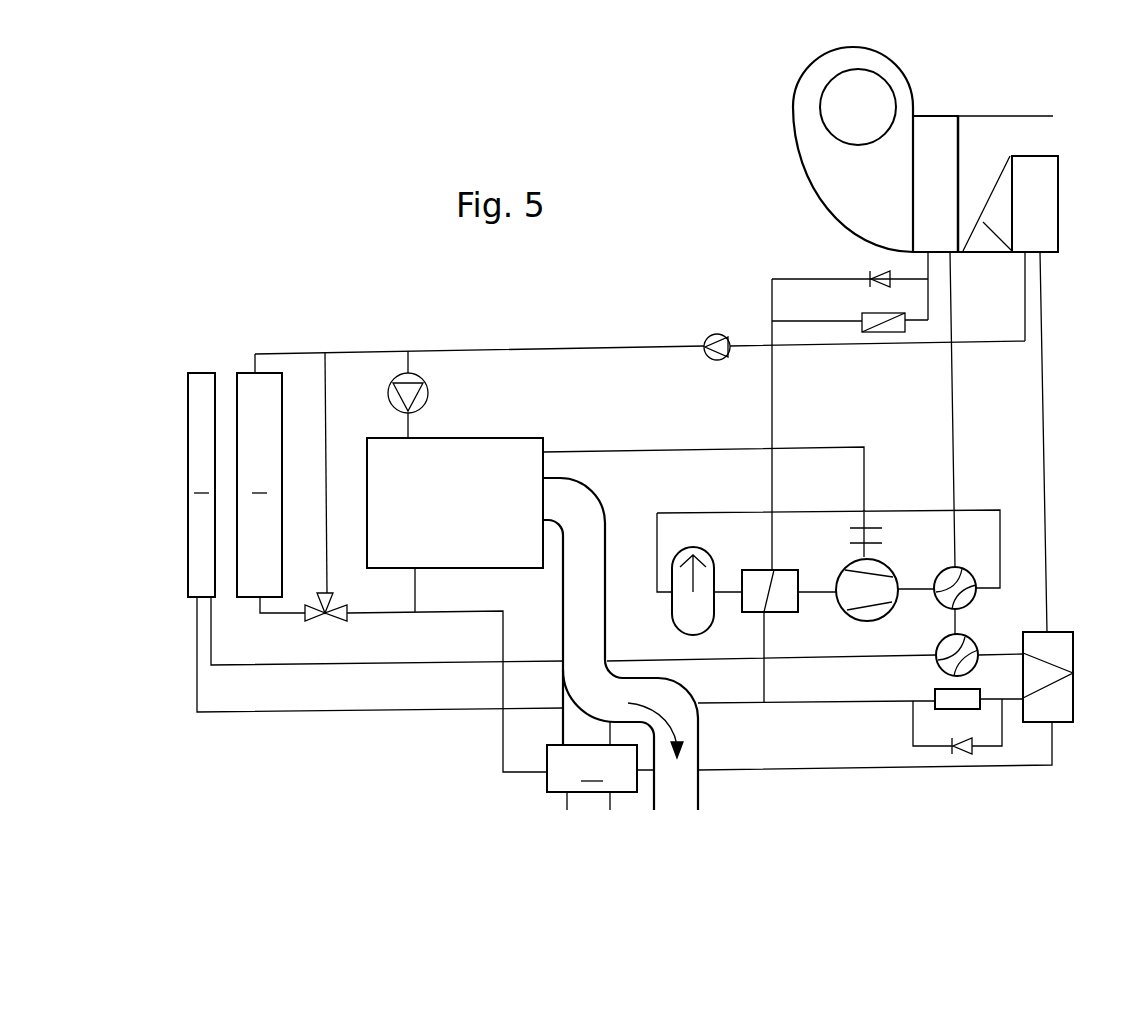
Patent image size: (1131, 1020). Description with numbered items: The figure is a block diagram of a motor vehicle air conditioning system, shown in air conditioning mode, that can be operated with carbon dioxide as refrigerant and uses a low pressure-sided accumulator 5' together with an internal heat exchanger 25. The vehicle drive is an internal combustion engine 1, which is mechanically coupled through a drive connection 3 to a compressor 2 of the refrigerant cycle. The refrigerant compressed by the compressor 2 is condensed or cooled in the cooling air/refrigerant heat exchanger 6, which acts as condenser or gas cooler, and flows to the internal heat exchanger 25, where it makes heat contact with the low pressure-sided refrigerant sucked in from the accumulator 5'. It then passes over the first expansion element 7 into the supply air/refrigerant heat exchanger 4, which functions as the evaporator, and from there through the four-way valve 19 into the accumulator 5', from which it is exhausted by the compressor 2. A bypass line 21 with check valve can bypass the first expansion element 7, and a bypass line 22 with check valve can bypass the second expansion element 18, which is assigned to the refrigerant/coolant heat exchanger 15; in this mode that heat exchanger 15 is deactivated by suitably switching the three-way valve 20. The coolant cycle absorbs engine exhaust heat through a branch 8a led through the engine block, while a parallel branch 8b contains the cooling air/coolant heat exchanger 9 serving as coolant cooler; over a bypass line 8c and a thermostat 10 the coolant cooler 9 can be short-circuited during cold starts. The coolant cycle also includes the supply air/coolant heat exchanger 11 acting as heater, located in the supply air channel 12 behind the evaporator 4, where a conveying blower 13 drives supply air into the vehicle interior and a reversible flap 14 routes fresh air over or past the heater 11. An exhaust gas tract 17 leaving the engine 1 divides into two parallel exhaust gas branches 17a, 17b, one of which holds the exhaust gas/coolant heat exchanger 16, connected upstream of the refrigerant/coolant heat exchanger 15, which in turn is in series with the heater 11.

The internal combustion engine 1 is at (488, 452).
The compressor 2 is at (838, 610).
The drive connection 3 is at (818, 446).
The supply air/refrigerant heat exchanger 4 is at (936, 132).
The low pressure-sided accumulator 5' is at (685, 591).
The cooling air/refrigerant heat exchanger 6 is at (375, 542).
The first expansion element 7 is at (865, 313).
The coolant cycle branch 8a is at (413, 430).
The parallel coolant cycle branch 8b is at (294, 354).
The bypass line 8c is at (328, 430).
The cooling air/coolant heat exchanger 9 is at (271, 493).
The thermostat 10 is at (326, 618).
The supply air/coolant heat exchanger 11 is at (1045, 185).
The supply air channel 12 is at (1023, 128).
The conveying blower 13 is at (850, 96).
The reversible flap 14 is at (990, 188).
The refrigerant/coolant heat exchanger 15 is at (1057, 636).
The exhaust gas/coolant heat exchanger 16 is at (799, 766).
The exhaust gas tract 17 is at (592, 528).
The exhaust gas branch 17a is at (572, 728).
The exhaust gas branch 17b is at (694, 754).
The second expansion element 18 is at (942, 693).
The 4 way valve 19 is at (945, 577).
The 3 way valve 20 is at (968, 648).
The bypass line 21 is at (782, 276).
The bypass line 22 is at (983, 748).
The internal heat exchanger 25 is at (789, 575).